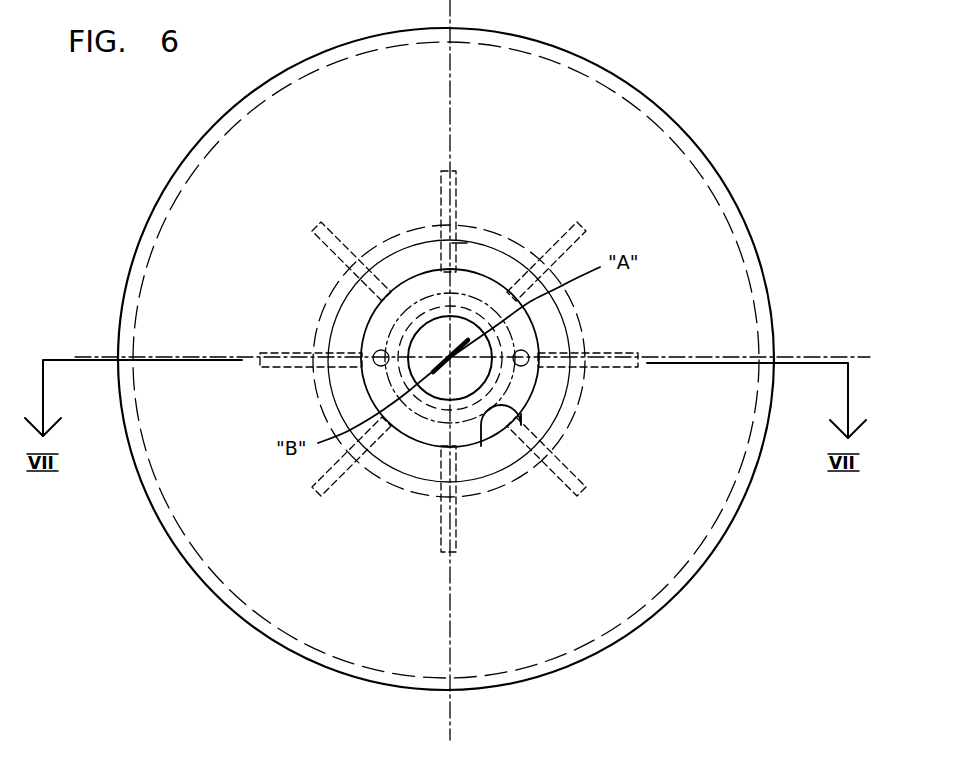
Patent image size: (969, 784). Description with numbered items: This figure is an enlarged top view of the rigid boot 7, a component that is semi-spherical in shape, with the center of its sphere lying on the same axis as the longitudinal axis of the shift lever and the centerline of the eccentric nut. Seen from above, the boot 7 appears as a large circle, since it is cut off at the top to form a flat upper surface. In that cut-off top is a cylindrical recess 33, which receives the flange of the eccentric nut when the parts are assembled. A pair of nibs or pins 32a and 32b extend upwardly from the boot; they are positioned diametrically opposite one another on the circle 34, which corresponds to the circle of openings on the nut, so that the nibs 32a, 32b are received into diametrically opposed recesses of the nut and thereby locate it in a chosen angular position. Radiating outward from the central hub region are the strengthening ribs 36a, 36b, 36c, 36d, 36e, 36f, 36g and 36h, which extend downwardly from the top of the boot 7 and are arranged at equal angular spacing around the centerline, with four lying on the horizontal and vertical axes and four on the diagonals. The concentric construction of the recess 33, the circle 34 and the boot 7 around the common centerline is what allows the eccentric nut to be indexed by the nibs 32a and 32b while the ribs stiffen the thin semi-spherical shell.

The rigid boot 7 is at (655, 200).
The nib or pin 32a is at (381, 350).
The nib or pin 32b is at (537, 347).
The cylindrical recess 33 is at (481, 446).
The circle 34 is at (478, 290).
The strengthening rib 36a is at (282, 353).
The strengthening rib 36b is at (338, 238).
The strengthening rib 36c is at (452, 188).
The strengthening rib 36d is at (570, 227).
The strengthening rib 36e is at (613, 355).
The strengthening rib 36f is at (573, 482).
The strengthening rib 36g is at (455, 527).
The strengthening rib 36h is at (318, 497).